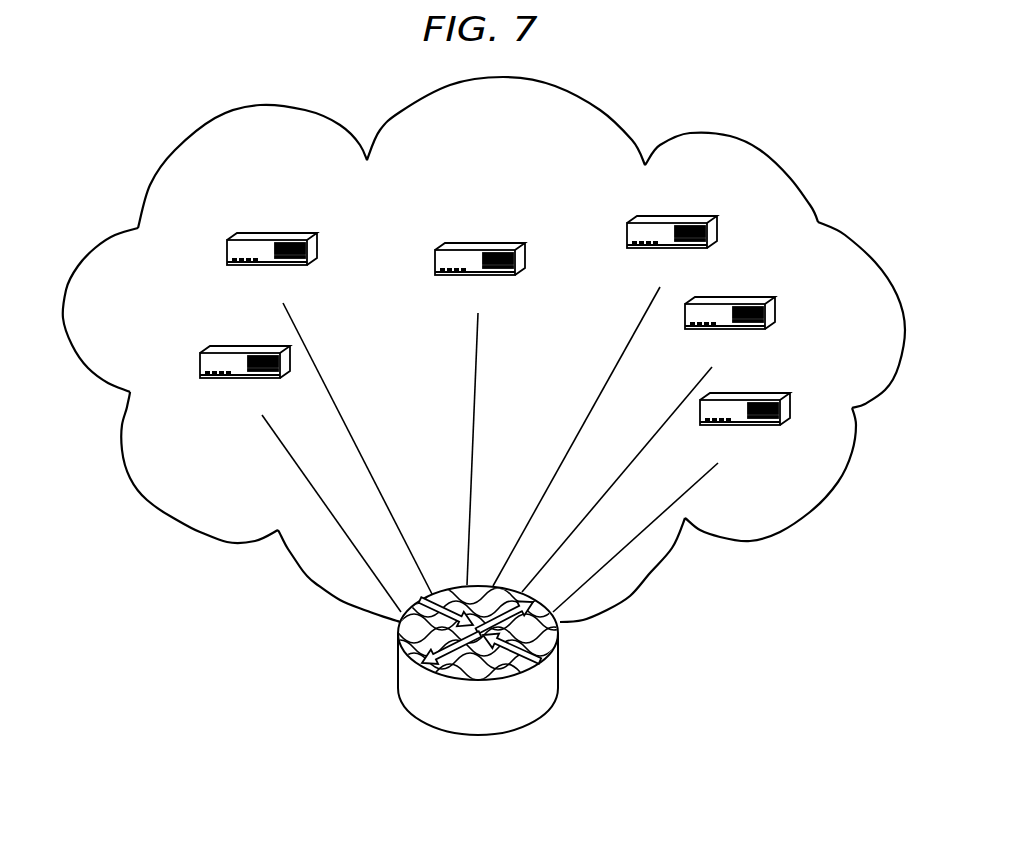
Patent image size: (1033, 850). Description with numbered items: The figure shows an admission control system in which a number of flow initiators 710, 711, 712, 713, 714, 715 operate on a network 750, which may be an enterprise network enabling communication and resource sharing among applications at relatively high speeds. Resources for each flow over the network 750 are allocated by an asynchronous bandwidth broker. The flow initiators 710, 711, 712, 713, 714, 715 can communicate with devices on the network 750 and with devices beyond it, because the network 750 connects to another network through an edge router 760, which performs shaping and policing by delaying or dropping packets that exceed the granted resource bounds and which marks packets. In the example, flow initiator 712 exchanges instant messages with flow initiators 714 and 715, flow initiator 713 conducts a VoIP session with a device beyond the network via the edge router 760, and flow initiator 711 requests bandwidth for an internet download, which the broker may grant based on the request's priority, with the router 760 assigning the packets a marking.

The network 750 is at (608, 115).
The flow initiator 710 is at (199, 363).
The flow initiator 711 is at (257, 233).
The flow initiator 712 is at (435, 262).
The flow initiator 713 is at (695, 215).
The flow initiator 714 is at (755, 298).
The flow initiator 715 is at (790, 407).
The edge router 760 is at (402, 707).